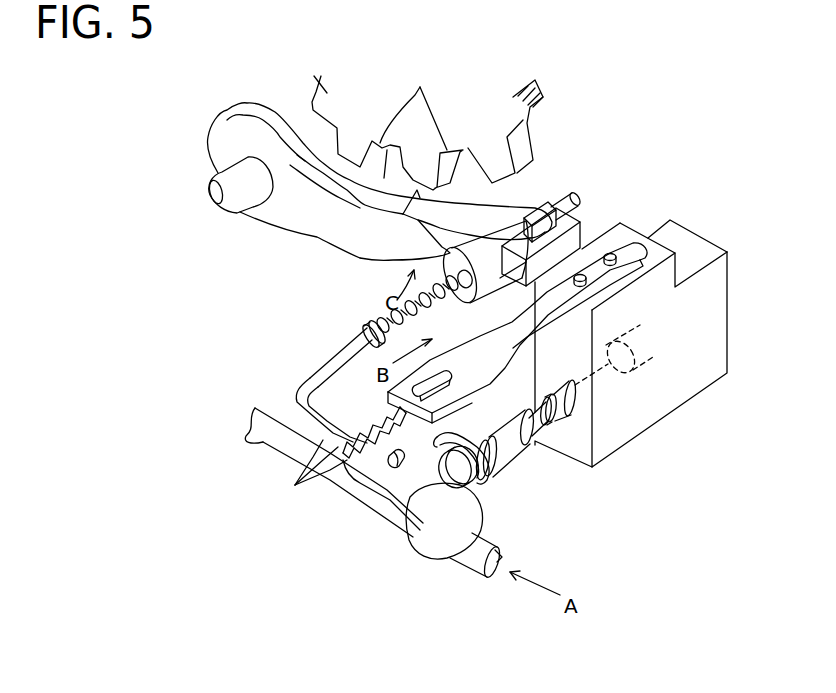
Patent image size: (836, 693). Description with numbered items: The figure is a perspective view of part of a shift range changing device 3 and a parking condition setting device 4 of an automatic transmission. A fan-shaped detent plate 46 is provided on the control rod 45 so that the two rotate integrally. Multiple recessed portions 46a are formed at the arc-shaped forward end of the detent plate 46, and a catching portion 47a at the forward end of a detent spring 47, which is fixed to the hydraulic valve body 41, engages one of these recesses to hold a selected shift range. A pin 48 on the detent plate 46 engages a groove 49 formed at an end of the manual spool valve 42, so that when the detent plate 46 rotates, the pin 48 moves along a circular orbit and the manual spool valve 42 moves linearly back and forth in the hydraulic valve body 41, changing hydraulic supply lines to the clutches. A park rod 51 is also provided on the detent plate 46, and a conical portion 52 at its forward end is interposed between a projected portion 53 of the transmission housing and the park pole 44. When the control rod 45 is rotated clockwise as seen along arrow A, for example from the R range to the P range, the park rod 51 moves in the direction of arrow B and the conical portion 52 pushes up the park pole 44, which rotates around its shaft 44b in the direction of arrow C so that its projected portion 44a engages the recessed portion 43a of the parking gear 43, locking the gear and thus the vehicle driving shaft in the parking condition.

The shift range changing device 3 is at (539, 500).
The parking condition setting device 4 is at (280, 302).
The hydraulic valve body 41 is at (728, 340).
The manual spool valve 42 is at (602, 388).
The parking gear 43 is at (313, 84).
The recessed portion 43a is at (424, 96).
The park pole 44 is at (273, 208).
The projected portion 44a is at (360, 208).
The shaft 44b is at (218, 174).
The control rod 45 is at (272, 442).
The detent plate 46 is at (390, 494).
The recessed portions 46a is at (295, 487).
The detent spring 47 is at (463, 357).
The catching portion 47a is at (310, 382).
The pin 48 is at (460, 445).
The groove 49 is at (482, 477).
The park rod 51 is at (338, 358).
The conical portion 52 is at (493, 247).
The projected portion 53 is at (574, 222).